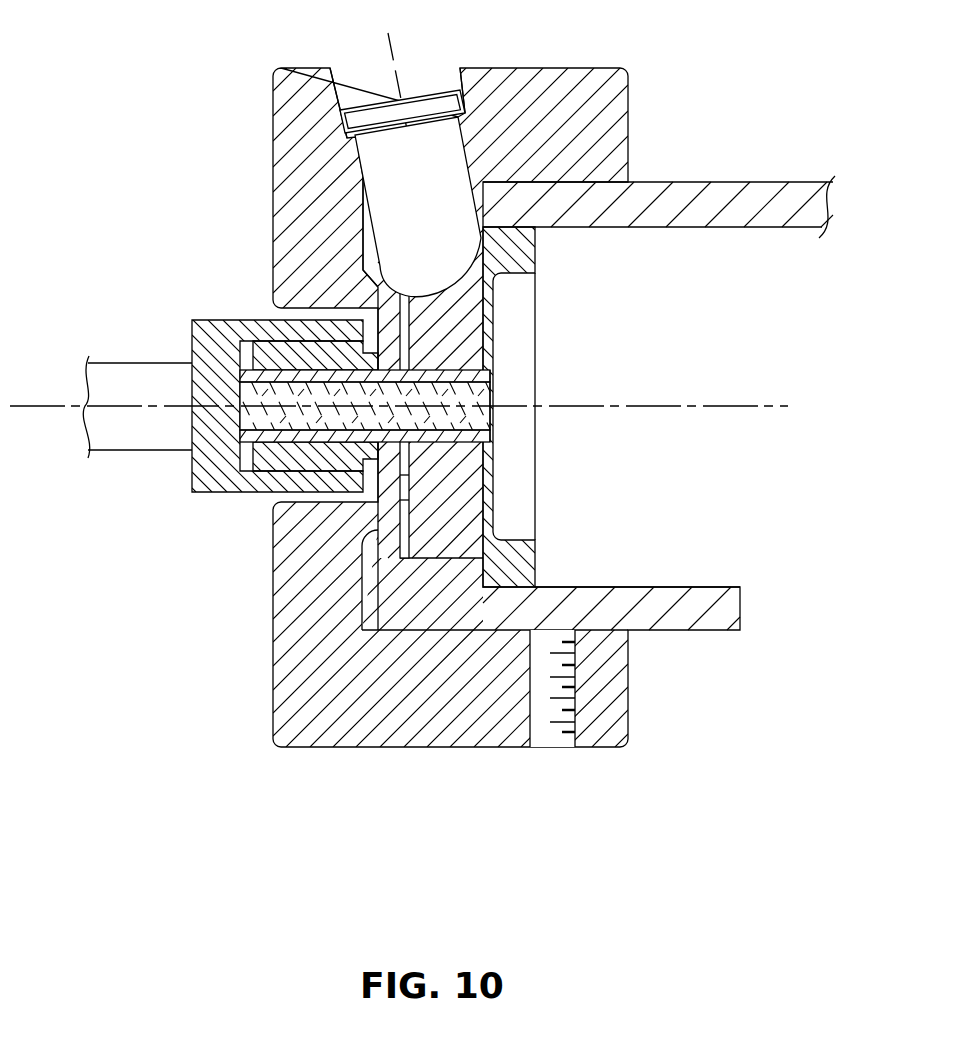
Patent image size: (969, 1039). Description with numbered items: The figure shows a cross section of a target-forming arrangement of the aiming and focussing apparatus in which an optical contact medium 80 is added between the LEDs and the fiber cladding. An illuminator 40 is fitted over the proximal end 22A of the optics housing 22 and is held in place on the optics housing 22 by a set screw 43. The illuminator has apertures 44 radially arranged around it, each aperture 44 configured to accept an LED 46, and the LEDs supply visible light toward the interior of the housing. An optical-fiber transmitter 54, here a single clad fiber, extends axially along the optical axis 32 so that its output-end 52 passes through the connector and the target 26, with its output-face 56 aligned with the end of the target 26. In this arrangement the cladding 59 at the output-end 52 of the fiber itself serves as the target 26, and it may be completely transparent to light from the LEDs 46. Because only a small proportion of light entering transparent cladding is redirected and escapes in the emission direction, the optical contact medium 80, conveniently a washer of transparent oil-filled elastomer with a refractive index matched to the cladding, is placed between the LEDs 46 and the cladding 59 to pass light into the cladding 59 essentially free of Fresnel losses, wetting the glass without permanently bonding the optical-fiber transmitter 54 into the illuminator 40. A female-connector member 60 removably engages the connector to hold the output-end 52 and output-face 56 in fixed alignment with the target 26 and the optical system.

The illuminator 40 is at (638, 93).
The aperture 44 is at (335, 92).
The LED 46 is at (383, 181).
The optics housing 22 is at (737, 170).
The proximal end 22A is at (547, 205).
The optical contact medium 80 is at (470, 300).
The cylindrical target 26 is at (501, 425).
The optical axis 32 is at (680, 405).
The output-end 52 is at (482, 393).
The output-face 56 is at (497, 410).
The optical-fiber transmitter 54 is at (243, 343).
The cladding 59 is at (270, 437).
The female-connector member 60 is at (205, 470).
The set screw 43 is at (548, 738).